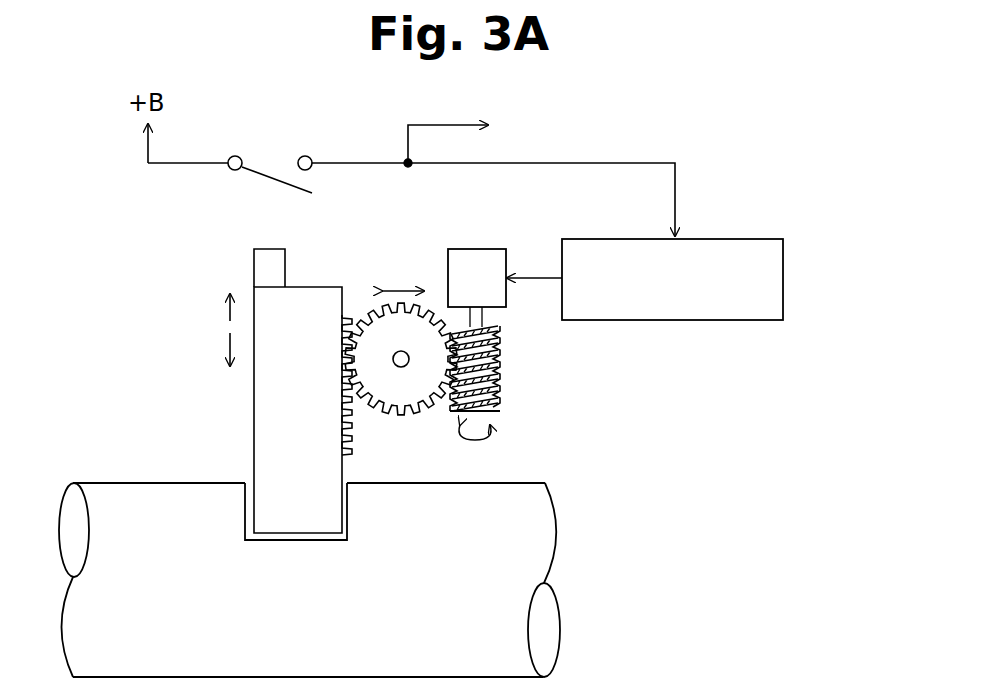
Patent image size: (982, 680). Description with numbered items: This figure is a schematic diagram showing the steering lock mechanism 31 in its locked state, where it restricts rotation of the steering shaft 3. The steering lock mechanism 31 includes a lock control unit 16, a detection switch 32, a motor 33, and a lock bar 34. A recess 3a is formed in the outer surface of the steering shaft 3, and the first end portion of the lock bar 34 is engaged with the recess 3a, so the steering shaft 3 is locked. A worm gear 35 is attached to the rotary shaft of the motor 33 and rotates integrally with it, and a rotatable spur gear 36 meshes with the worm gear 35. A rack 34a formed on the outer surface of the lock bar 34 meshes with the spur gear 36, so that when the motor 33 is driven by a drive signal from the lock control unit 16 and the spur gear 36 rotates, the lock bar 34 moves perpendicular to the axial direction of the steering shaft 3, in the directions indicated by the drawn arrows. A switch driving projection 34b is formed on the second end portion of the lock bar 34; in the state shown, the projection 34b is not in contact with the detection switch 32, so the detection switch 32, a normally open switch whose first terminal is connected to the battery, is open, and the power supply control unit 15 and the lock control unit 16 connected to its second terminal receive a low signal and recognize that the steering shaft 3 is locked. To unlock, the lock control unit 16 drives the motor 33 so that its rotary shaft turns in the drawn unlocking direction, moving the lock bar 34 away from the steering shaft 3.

The steering shaft 3 is at (334, 580).
The recess 3a is at (289, 540).
The power supply control unit 15 is at (626, 124).
The lock control unit 16 is at (784, 268).
The steering lock mechanism 31 is at (103, 268).
The detection switch 32 is at (264, 168).
The motor 33 is at (490, 249).
The lock bar 34 is at (313, 371).
The rack 34a is at (355, 296).
The switch driving projection 34b is at (268, 252).
The worm gear 35 is at (501, 345).
The spur gear 36 is at (383, 392).